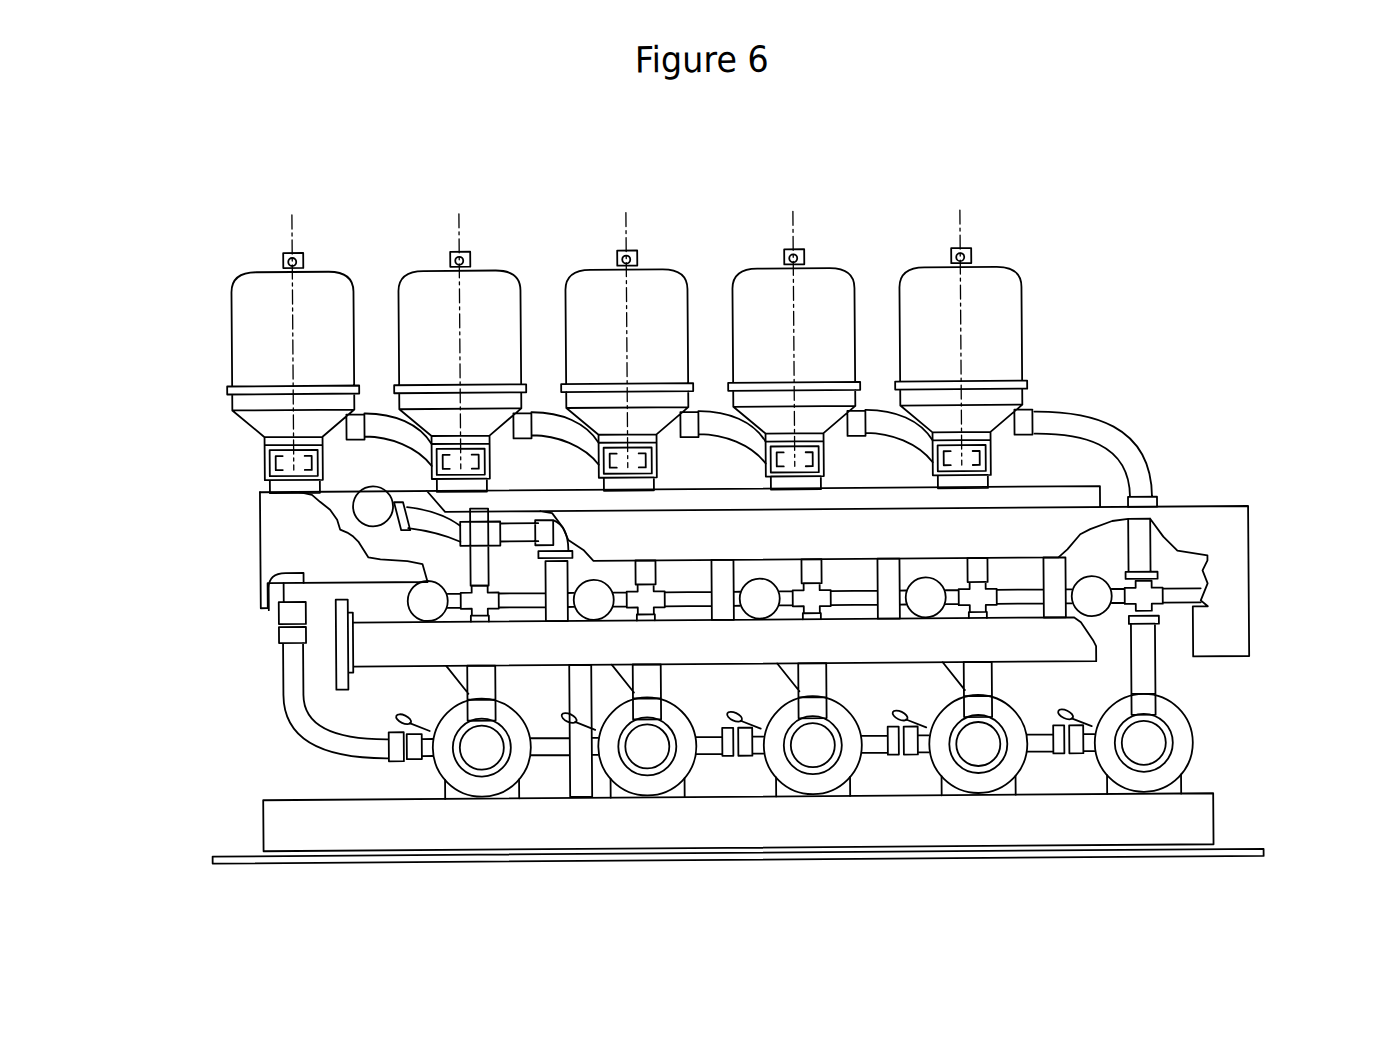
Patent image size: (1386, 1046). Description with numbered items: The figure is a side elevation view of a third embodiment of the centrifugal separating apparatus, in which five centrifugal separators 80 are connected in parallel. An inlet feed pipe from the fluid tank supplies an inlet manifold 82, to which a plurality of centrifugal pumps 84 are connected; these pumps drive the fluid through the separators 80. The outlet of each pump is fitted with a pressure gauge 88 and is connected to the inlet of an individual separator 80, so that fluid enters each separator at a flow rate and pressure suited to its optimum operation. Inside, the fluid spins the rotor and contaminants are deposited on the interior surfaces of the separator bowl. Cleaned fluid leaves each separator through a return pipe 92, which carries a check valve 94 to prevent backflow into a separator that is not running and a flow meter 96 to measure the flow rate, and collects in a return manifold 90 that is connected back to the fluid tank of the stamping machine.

The centrifugal separator 80 is at (252, 323).
The inlet manifold 82 is at (1050, 538).
The centrifugal pump 84 is at (1177, 739).
The pressure gauge 88 is at (1095, 599).
The return manifold 90 is at (371, 644).
The return pipe 92 is at (333, 493).
The check valve 94 is at (486, 521).
The flow meter 96 is at (310, 478).